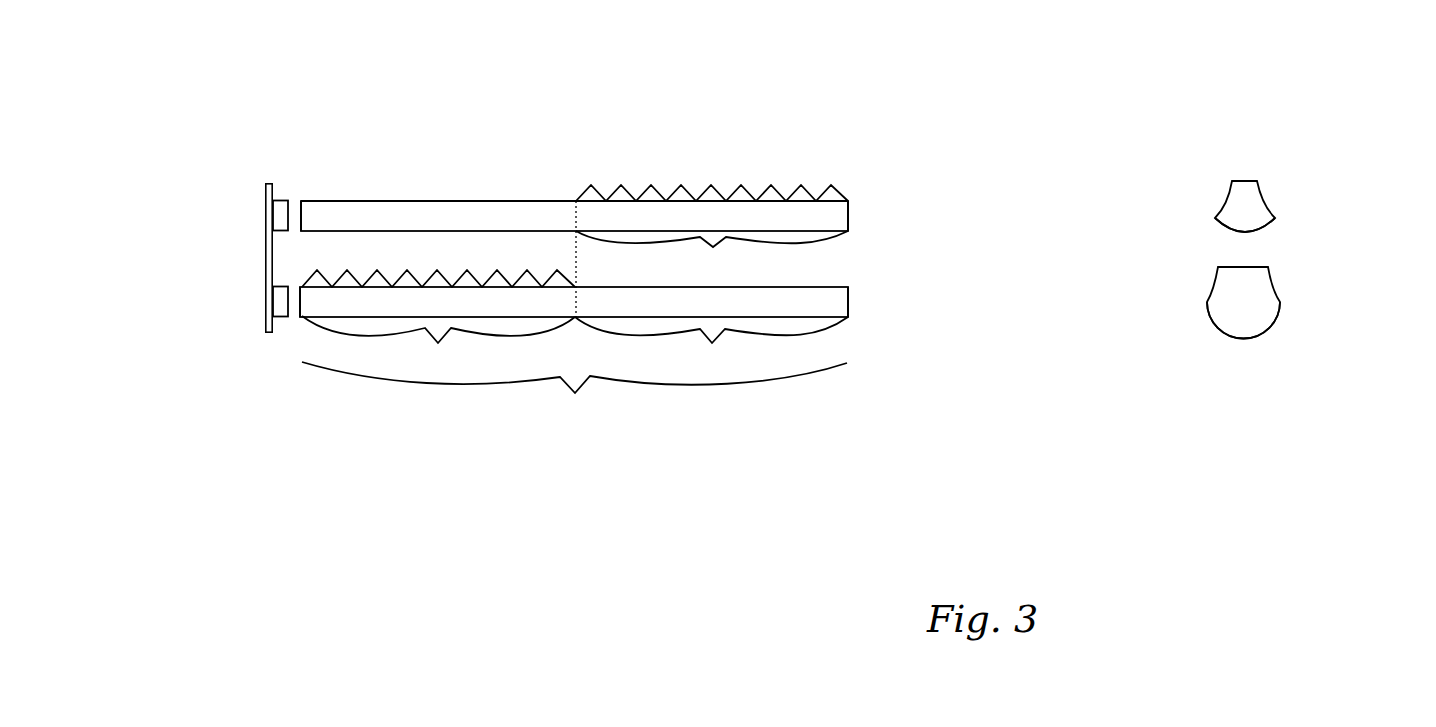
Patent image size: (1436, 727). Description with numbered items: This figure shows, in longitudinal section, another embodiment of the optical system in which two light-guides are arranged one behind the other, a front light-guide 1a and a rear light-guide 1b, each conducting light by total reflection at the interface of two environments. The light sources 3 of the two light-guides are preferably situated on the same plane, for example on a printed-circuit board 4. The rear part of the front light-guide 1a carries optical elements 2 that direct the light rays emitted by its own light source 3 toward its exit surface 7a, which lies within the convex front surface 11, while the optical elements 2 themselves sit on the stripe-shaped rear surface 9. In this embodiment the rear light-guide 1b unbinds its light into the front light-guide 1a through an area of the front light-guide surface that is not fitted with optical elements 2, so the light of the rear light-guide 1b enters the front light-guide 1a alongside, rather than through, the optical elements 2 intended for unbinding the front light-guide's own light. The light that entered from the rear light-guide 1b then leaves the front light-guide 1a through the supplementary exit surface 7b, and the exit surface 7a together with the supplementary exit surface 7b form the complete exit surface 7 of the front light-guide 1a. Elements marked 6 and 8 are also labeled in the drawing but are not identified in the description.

The front light-guide 1a is at (795, 303).
The rear light-guide 1b is at (498, 202).
The optical elements 2 is at (742, 187).
The light source 3 is at (287, 198).
The printed-circuit board 4 is at (262, 275).
The blade end 6 is at (298, 213).
The complete exit surface 7 is at (1273, 402).
The exit surface 7a is at (1253, 232).
The supplementary exit surface 7b is at (711, 350).
The blade surface 8 is at (418, 198).
The rear surface 9 is at (1245, 263).
The convex front surface 11 is at (1228, 230).